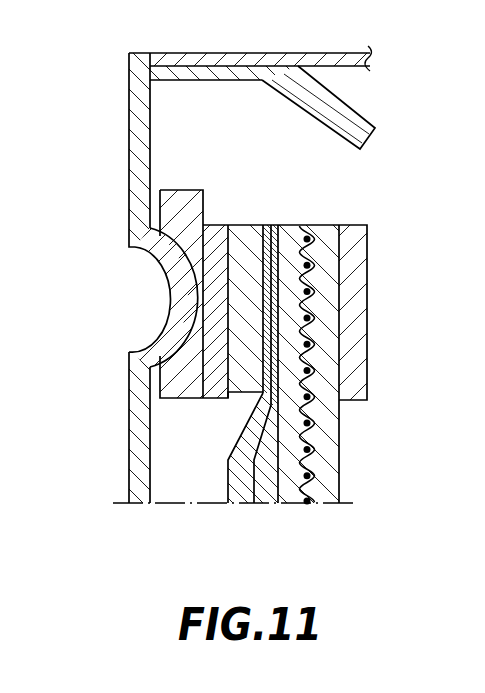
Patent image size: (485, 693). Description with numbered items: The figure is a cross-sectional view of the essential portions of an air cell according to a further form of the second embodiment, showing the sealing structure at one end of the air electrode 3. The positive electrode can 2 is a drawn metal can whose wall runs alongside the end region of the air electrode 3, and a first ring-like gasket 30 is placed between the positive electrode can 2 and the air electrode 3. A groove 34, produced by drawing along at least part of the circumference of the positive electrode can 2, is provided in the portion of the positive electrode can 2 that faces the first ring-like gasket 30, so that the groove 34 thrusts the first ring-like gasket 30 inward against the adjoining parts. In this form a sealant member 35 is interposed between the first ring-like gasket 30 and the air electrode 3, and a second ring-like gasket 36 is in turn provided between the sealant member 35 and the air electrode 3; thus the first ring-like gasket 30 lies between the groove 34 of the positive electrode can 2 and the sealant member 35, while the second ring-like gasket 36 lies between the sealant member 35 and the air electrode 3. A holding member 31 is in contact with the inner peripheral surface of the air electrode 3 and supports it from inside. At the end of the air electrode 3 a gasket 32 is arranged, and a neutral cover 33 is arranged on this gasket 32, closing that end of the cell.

The positive electrode can 2 is at (134, 115).
The air electrode 3 is at (308, 518).
The first ring-like gasket 30 is at (168, 219).
The holding member 31 is at (355, 345).
The gasket 32 is at (342, 98).
The neutral cover 33 is at (270, 52).
The groove 34 is at (157, 258).
The sealant member 35 is at (210, 307).
The second ring-like gasket 36 is at (240, 373).